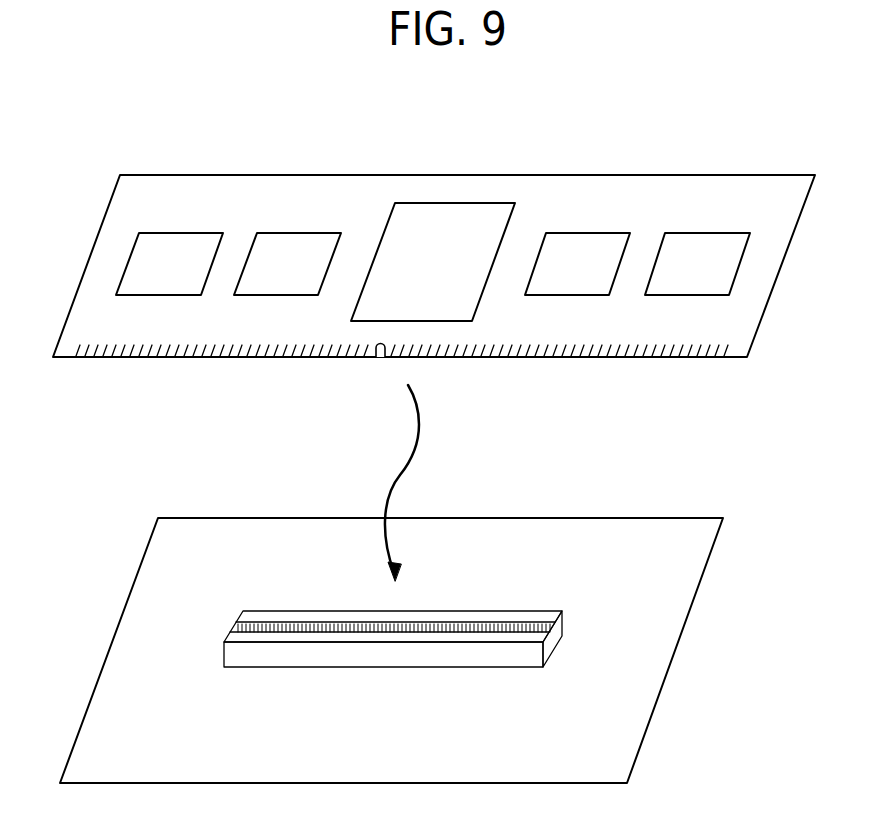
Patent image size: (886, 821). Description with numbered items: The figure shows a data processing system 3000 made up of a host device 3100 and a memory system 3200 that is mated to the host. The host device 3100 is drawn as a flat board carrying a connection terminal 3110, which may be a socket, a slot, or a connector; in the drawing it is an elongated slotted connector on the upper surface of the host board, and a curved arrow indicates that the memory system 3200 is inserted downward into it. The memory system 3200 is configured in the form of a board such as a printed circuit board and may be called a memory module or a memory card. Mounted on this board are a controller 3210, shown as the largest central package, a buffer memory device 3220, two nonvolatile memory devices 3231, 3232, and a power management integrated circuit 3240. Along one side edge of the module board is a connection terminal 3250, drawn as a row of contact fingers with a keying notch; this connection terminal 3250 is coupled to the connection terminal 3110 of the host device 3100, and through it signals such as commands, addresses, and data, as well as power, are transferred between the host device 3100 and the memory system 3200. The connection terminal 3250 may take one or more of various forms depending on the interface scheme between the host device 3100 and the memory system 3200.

The data processing system 3000 is at (60, 133).
The host device 3100 is at (391, 650).
The connection terminal 3110 is at (587, 602).
The memory system 3200 is at (434, 291).
The controller 3210 is at (433, 262).
The buffer memory device 3220 is at (287, 264).
The nonvolatile memory device 3231 is at (577, 264).
The nonvolatile memory device 3232 is at (697, 264).
The power management integrated circuit 3240 is at (169, 264).
The connection terminal 3250 is at (104, 348).